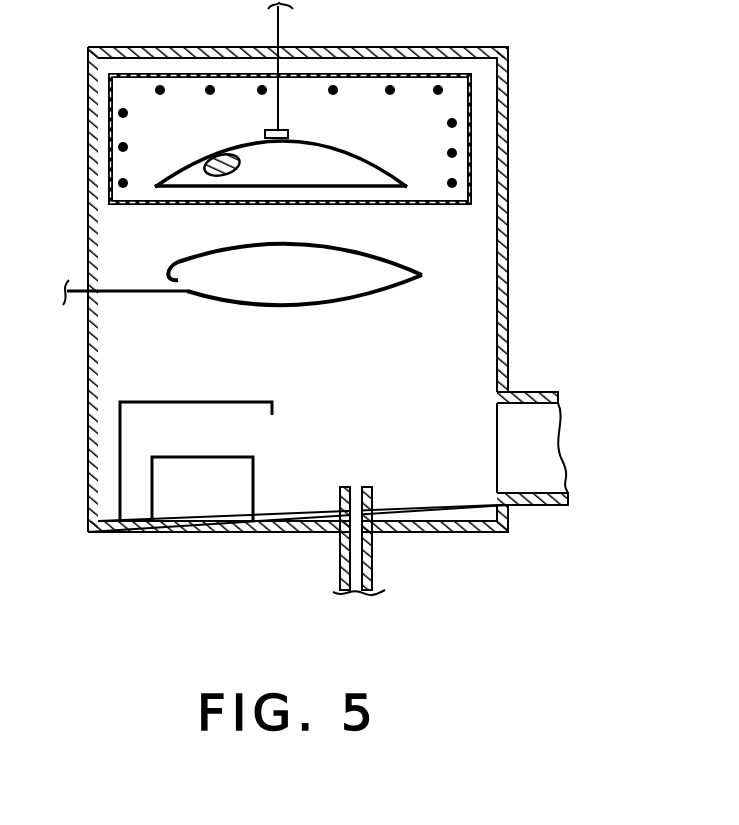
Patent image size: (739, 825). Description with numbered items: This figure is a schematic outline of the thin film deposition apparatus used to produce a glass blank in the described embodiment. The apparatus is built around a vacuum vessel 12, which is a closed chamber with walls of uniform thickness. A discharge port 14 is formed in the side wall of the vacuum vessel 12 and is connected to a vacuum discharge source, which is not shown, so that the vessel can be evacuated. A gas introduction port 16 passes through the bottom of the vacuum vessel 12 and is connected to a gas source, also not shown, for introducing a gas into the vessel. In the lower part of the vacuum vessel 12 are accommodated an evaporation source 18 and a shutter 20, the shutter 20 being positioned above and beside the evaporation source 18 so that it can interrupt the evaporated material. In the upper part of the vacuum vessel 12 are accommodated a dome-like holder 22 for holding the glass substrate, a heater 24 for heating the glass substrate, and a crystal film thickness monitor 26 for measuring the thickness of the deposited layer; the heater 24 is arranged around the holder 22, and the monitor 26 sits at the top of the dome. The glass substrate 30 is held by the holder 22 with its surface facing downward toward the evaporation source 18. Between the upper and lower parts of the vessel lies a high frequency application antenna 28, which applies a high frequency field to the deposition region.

The vacuum vessel 12 is at (509, 70).
The discharge port 14 is at (536, 393).
The gas introduction port 16 is at (372, 572).
The evaporation source 18 is at (207, 503).
The shutter 20 is at (233, 402).
The doom-like holder 22 is at (407, 178).
The heater 24 is at (458, 124).
The crystal film thickness monitor 26 is at (300, 128).
The high frequency application antenna 28 is at (425, 275).
The glass substrate 30 is at (225, 150).